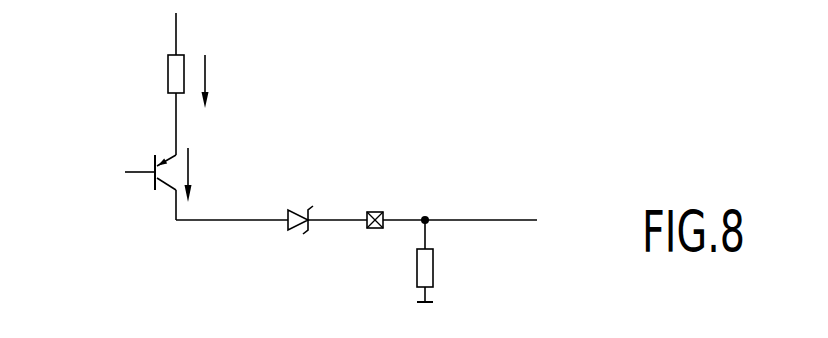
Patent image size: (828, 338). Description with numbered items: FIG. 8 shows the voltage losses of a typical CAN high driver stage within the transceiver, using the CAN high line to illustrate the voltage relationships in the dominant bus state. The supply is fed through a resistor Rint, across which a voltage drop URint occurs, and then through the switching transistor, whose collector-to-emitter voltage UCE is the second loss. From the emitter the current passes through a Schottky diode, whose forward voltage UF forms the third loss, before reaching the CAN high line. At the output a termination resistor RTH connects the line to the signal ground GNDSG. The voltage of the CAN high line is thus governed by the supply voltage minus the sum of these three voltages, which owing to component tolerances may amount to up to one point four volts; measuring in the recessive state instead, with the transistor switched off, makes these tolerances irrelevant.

The resistor Rint is at (150, 74).
The voltage drop across a resistor URint is at (243, 81).
The voltage from the collector to the emitter of the switching transistor UCE is at (215, 175).
The forward voltage of a Schottky diode UF is at (315, 193).
The termination resistor RTH is at (444, 261).
The signal ground GNDSG is at (426, 318).